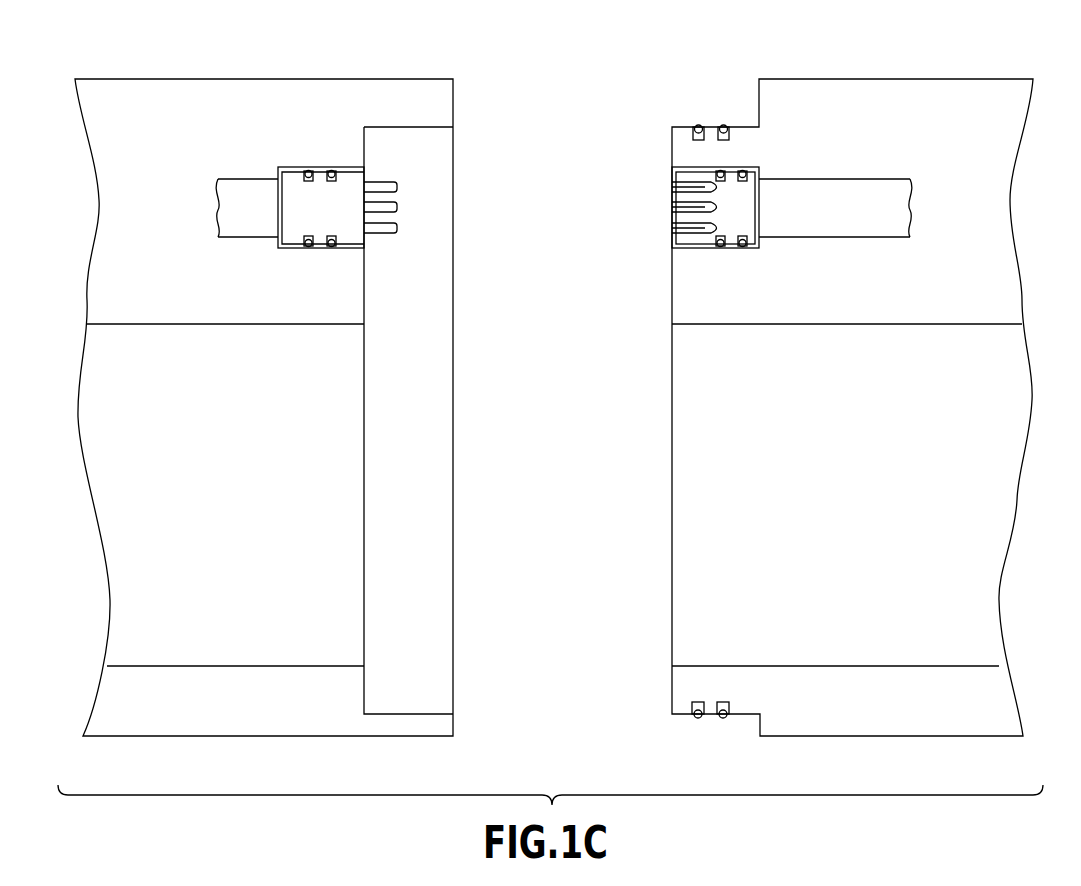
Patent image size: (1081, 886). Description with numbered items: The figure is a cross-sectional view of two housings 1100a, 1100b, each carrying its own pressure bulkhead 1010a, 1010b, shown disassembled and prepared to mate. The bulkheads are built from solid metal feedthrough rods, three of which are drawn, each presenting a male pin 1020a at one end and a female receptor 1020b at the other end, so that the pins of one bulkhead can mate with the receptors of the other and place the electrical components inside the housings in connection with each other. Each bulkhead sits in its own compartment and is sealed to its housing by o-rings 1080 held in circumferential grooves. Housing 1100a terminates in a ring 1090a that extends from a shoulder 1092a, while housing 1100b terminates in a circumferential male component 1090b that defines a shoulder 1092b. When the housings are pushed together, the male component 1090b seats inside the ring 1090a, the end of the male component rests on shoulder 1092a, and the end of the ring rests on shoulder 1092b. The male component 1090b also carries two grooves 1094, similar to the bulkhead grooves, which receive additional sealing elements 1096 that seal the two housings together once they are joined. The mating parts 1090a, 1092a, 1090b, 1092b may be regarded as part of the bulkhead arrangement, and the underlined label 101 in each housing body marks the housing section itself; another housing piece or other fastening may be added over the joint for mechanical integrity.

The housing 101 is at (242, 502).
The bulkhead 1010a is at (279, 130).
The bulkhead 1010b is at (823, 130).
The ring 1090a is at (411, 107).
The circumferential male component 1090b is at (680, 127).
The shoulder 1092a is at (365, 162).
The shoulder 1092b is at (759, 100).
The male pin 1020a is at (397, 185).
The female receptor 1020b is at (678, 208).
The o-rings 1080 is at (308, 248).
The grooves 1094 is at (722, 702).
The contact ball 1096 is at (723, 720).
The housing 1100a is at (223, 725).
The housing 1100b is at (883, 725).